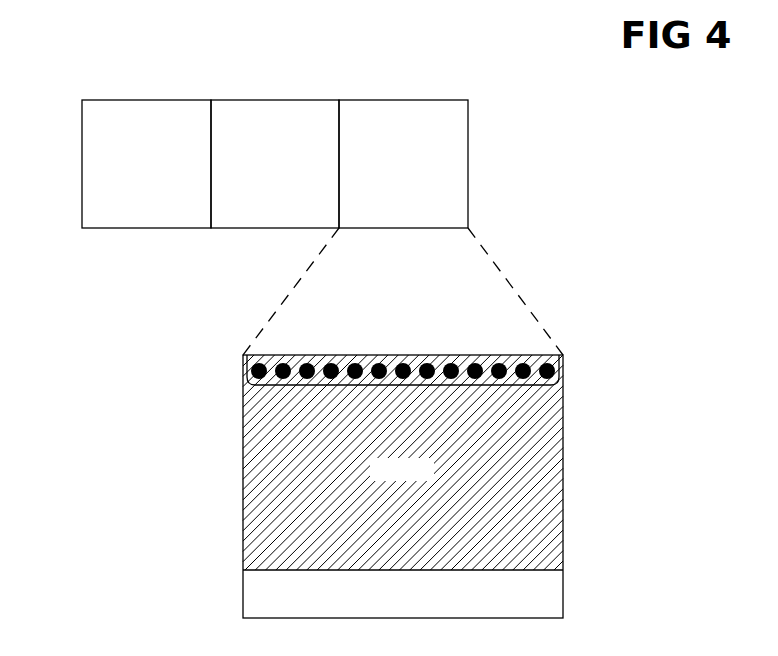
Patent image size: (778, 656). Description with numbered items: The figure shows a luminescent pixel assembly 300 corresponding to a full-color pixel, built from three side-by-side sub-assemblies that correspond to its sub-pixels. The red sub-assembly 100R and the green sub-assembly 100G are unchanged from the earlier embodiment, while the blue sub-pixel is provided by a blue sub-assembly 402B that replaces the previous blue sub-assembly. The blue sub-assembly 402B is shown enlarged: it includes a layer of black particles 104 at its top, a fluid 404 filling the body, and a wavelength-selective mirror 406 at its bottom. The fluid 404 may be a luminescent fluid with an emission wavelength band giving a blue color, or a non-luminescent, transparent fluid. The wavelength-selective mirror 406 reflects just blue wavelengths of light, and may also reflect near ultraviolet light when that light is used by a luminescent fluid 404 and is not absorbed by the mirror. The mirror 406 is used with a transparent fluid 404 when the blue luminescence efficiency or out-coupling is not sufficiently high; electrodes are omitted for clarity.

The red sub-assembly 100R is at (146, 164).
The green sub-assembly 100G is at (275, 164).
The blue sub-assembly 402B is at (614, 459).
The black particles 104 is at (396, 386).
The fluid 404 is at (402, 482).
The wavelength-selective mirror 406 is at (403, 589).
The pixel assembly 300 is at (86, 494).